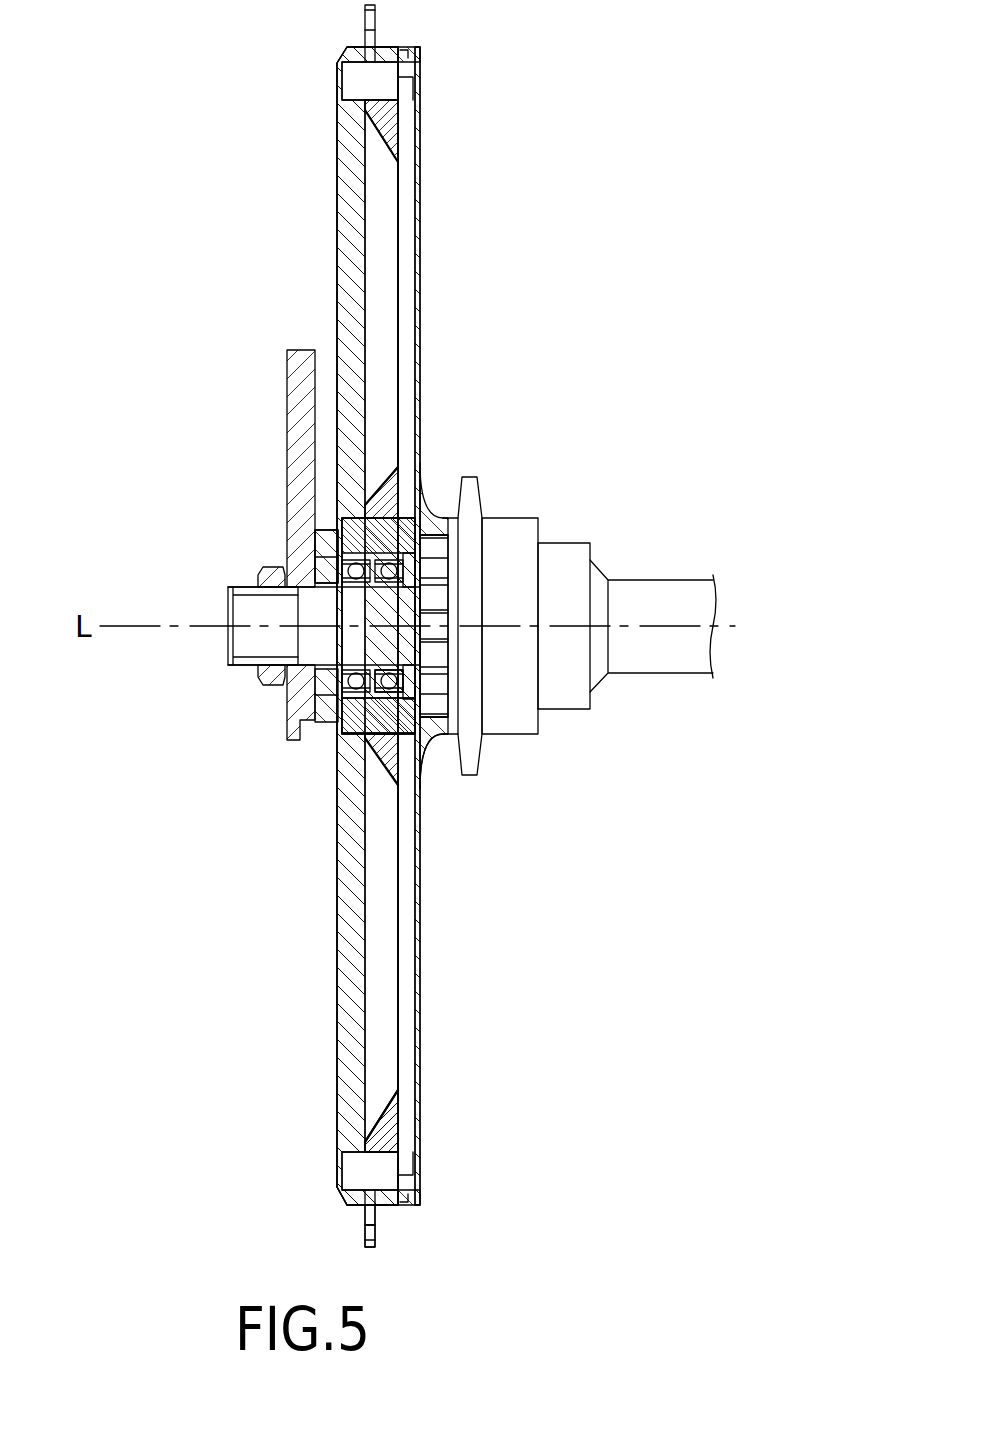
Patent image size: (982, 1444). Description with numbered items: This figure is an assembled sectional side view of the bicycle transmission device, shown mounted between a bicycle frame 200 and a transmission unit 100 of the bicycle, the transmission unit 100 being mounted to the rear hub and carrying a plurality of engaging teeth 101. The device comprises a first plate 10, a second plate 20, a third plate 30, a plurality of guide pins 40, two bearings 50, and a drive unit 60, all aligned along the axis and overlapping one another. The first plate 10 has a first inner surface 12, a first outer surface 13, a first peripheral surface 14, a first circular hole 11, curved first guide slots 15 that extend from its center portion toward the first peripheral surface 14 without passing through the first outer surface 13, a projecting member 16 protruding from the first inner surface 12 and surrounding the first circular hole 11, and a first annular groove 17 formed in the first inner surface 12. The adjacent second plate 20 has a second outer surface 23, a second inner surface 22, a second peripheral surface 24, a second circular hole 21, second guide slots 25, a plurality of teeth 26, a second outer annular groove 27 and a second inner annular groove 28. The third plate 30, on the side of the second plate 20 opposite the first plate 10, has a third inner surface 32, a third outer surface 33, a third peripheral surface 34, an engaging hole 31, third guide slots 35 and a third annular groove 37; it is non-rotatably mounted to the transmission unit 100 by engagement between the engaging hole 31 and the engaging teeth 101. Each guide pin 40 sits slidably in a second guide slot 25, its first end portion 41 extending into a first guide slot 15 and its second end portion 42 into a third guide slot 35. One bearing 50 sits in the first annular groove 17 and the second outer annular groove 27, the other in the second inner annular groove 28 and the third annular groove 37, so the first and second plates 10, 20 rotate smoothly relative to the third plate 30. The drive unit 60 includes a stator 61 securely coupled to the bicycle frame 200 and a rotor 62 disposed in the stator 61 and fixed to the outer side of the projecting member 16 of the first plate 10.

The first plate 10 is at (338, 1027).
The first circular hole 11 is at (353, 588).
The first inner surface 12 is at (358, 1078).
The first outer surface 13 is at (336, 935).
The first peripheral surface 14 is at (346, 1203).
The first guide slots 15 is at (342, 732).
The projecting member 16 is at (270, 667).
The first annular groove 17 is at (298, 703).
The second plate 20 is at (384, 1232).
The second circular hole 21 is at (440, 590).
The second inner surface 22 is at (396, 1150).
The second outer surface 23 is at (367, 626).
The second peripheral surface 24 is at (376, 1207).
The second guide slots 25 is at (412, 765).
The teeth 26 is at (376, 1247).
The second outer annular groove 27 is at (352, 560).
The second inner annular groove 28 is at (375, 560).
The third plate 30 is at (430, 97).
The engaging hole 31 is at (434, 626).
The third inner surface 32 is at (381, 1116).
The third outer surface 33 is at (422, 985).
The third peripheral surface 34 is at (421, 48).
The third guide slots 35 is at (405, 945).
The third annular groove 37 is at (405, 600).
The guide pins 40 is at (358, 735).
The first end portion 41 is at (343, 714).
The second end portion 42 is at (406, 699).
The bearings 50 is at (424, 745).
The drive unit 60 is at (320, 565).
The stator 61 is at (320, 547).
The rotor 62 is at (326, 556).
The transmission unit 100 is at (558, 539).
The engaging teeth 101 is at (433, 540).
The bicycle frame 200 is at (283, 396).